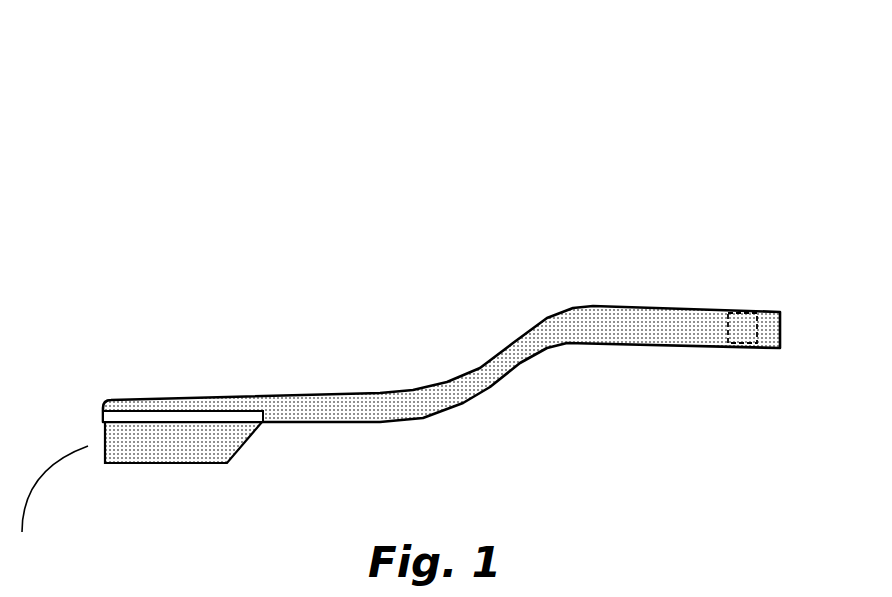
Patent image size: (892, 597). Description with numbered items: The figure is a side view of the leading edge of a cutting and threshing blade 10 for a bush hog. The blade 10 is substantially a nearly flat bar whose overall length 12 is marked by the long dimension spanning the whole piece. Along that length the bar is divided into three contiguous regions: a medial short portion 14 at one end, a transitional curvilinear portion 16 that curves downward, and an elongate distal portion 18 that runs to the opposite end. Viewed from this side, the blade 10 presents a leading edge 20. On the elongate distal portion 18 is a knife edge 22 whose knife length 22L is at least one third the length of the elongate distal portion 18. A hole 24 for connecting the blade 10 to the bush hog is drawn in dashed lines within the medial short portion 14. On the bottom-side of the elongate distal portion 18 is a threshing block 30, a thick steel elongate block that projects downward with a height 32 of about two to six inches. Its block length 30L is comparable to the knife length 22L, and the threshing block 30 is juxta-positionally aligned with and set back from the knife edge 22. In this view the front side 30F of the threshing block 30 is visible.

The cutting and threshing blade 10 is at (133, 143).
The overall length 12 is at (103, 257).
The medial short portion 14 is at (787, 275).
The transitional curvilinear portion 16 is at (638, 293).
The elongate distal portion 18 is at (115, 335).
The leading edge 20 is at (503, 370).
The knife edge 22 is at (243, 420).
The knife length 22L is at (265, 387).
The hole 24 is at (745, 333).
The threshing block 30 is at (116, 520).
The front side 30F is at (140, 445).
The block length 30L is at (265, 486).
The height 32 is at (53, 509).